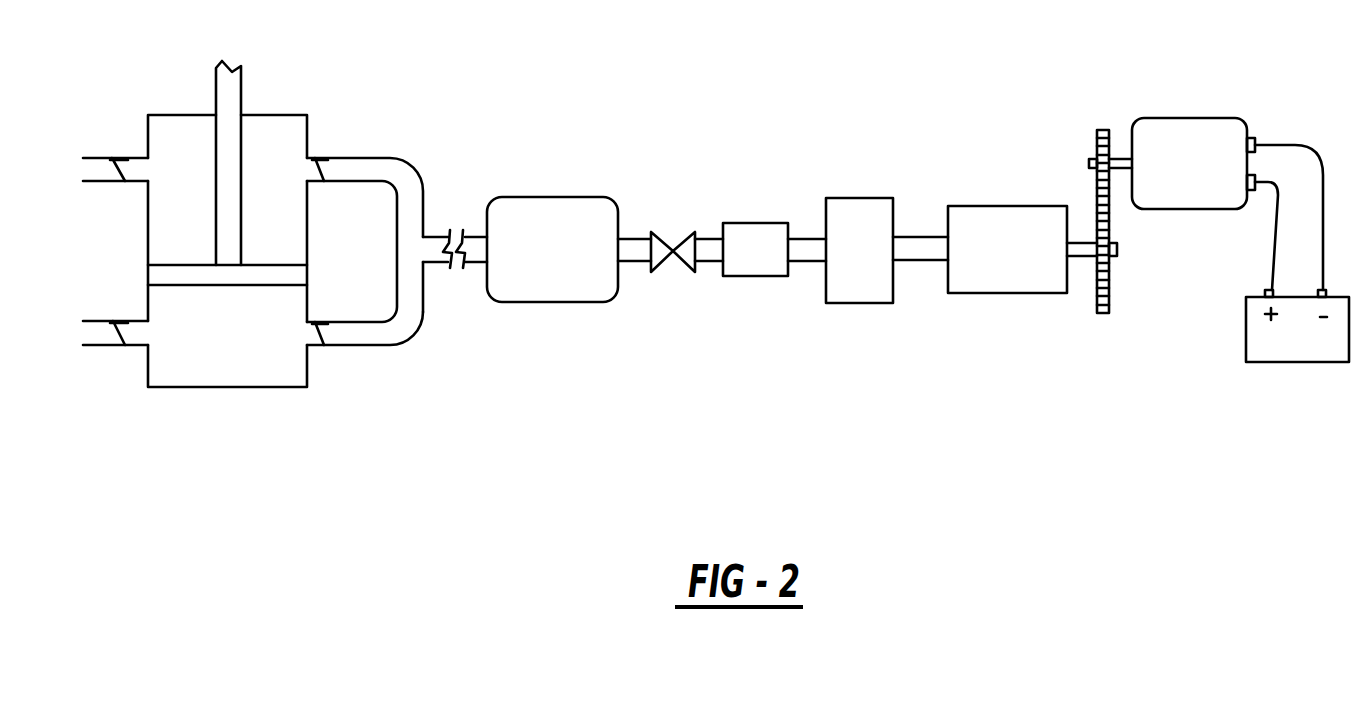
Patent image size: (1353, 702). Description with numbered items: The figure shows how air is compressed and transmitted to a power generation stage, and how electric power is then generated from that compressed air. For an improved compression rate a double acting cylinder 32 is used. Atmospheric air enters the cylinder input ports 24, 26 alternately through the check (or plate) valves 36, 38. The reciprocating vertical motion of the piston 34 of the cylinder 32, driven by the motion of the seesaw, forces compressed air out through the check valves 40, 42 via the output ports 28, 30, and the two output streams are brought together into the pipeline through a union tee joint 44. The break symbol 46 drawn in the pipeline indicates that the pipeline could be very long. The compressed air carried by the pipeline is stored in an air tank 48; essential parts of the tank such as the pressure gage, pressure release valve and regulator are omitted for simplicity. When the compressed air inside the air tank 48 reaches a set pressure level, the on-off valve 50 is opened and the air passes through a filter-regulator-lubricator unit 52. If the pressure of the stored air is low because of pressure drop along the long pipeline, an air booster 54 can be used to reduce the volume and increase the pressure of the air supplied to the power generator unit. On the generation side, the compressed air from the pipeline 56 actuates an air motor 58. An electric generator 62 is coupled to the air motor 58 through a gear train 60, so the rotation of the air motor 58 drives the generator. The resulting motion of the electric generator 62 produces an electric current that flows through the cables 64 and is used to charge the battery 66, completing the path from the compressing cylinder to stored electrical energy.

The cylinder input port 24 is at (100, 166).
The cylinder input port 26 is at (103, 337).
The output port 28 is at (395, 158).
The output port 30 is at (347, 346).
The cylinder 32 is at (293, 207).
The piston 34 is at (219, 197).
The check valve 36 is at (124, 169).
The check valve 38 is at (124, 338).
The check valve 40 is at (316, 168).
The check valve 42 is at (318, 330).
The union tee joint 44 is at (408, 188).
The pipeline break indication 46 is at (437, 262).
The air tank 48 is at (550, 203).
The on-off valve 50 is at (665, 243).
The filter-regulator-lubricator unit 52 is at (760, 233).
The air booster 54 is at (860, 205).
The pipeline 56 is at (918, 245).
The air motor 58 is at (1017, 213).
The gear train 60 is at (1102, 315).
The electric generator 62 is at (1194, 118).
The cables 64 is at (1320, 263).
The battery 66 is at (1246, 341).